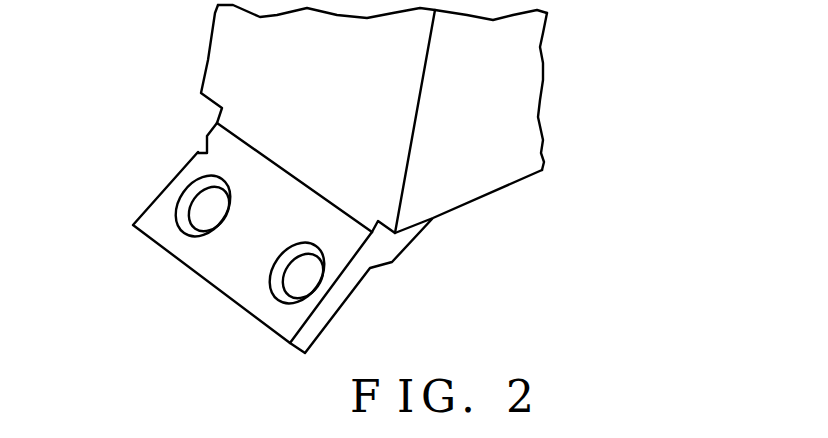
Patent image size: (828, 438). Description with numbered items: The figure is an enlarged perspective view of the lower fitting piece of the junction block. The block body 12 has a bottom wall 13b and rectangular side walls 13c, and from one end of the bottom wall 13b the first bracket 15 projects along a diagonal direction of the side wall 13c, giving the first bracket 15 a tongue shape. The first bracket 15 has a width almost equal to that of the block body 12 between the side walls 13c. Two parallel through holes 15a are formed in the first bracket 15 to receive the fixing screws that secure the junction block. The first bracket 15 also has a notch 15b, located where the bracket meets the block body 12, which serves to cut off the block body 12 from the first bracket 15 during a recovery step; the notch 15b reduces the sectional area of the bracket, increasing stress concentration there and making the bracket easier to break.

The block body 12 is at (556, 100).
The bottom wall 13b is at (485, 195).
The side wall 13c is at (512, 45).
The first bracket 15 is at (366, 295).
The through holes 15a is at (185, 207).
The notch 15b is at (195, 152).